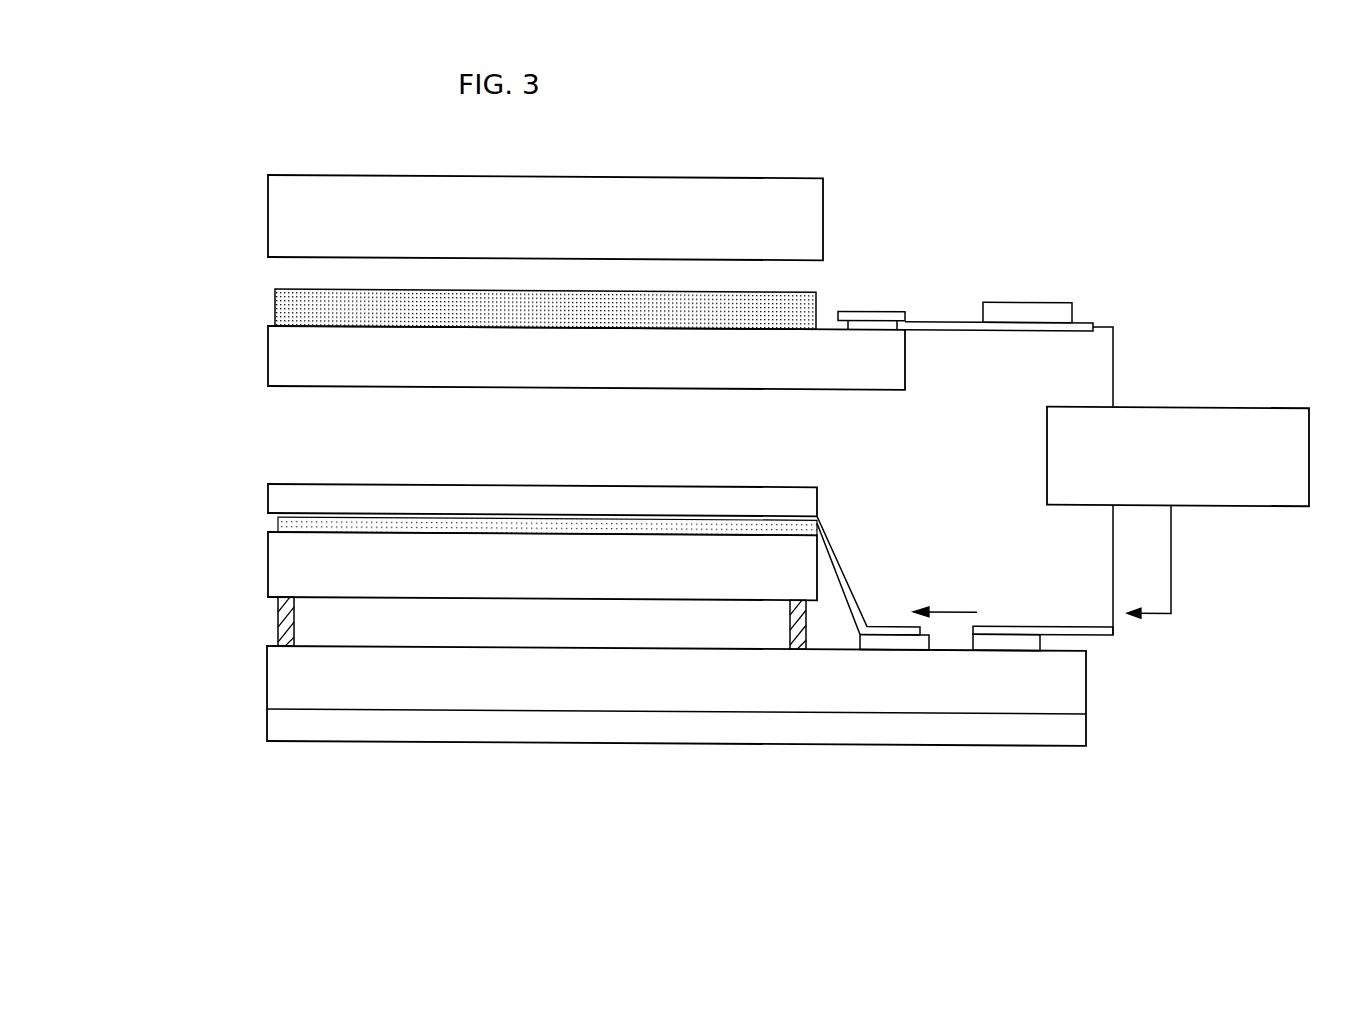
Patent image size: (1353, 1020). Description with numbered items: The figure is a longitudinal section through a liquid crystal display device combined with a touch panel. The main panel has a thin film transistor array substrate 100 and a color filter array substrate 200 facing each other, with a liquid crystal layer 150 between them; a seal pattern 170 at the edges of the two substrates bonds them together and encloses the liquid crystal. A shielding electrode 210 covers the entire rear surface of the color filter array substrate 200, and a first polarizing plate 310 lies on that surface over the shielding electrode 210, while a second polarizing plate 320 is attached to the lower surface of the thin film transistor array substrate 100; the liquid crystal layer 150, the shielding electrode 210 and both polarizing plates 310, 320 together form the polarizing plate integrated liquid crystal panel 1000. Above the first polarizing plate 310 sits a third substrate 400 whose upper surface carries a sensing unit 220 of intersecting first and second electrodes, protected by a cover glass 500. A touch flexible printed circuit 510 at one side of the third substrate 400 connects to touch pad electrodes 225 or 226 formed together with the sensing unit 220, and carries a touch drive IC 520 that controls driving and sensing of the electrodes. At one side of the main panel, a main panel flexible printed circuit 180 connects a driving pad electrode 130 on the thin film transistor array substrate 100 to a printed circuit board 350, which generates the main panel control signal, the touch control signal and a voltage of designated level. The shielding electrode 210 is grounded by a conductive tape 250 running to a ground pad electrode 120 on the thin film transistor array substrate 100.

The polarizing plate integrated liquid crystal panel 1000 is at (170, 503).
The thin film transistor array substrate 100 is at (277, 676).
The ground pad electrode 120 is at (893, 641).
The driving pad electrode 130 is at (1010, 641).
The liquid crystal layer 150 is at (337, 638).
The seal pattern 170 is at (278, 620).
The main panel FPC 180 is at (1025, 622).
The color filter array substrate 200 is at (277, 572).
The shielding electrode 210 is at (277, 525).
The sensing unit 220 is at (275, 317).
The touch pad electrode 225 is at (866, 384).
The touch pad electrode 226 is at (868, 323).
The conductive tape 250 is at (837, 555).
The first polarizing plate 310 is at (277, 501).
The second polarizing plate 320 is at (277, 723).
The printed circuit board 350 is at (1273, 414).
The third substrate 400 is at (275, 355).
The cover glass 500 is at (275, 215).
The touch FPC 510 is at (965, 324).
The touch drive IC 520 is at (1027, 303).